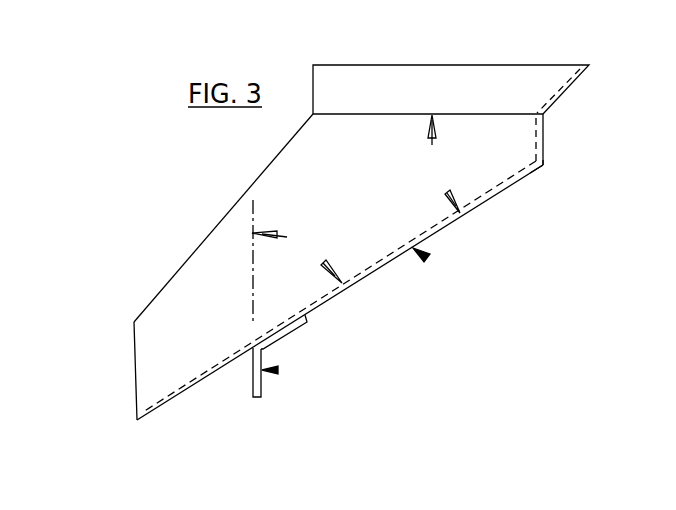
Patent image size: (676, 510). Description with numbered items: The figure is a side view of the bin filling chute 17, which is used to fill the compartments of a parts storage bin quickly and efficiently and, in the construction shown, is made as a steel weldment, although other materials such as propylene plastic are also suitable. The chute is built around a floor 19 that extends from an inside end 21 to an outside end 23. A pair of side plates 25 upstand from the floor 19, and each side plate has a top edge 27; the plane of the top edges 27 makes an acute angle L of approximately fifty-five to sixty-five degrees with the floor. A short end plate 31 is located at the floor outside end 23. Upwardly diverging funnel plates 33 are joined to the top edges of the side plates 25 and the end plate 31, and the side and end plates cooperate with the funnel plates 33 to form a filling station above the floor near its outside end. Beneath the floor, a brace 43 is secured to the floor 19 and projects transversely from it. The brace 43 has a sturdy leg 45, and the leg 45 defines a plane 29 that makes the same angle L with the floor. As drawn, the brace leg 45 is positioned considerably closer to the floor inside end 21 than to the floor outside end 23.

The bin filling chute 17 is at (425, 256).
The floor 19 is at (373, 272).
The inside end 21 is at (135, 418).
The outside end 23 is at (545, 166).
The side plate 25 is at (357, 200).
The top edge 27 is at (440, 113).
The plane 29 is at (250, 216).
The end plate 31 is at (543, 140).
The funnel plate 33 is at (520, 80).
The brace 43 is at (277, 370).
The leg 45 is at (258, 385).